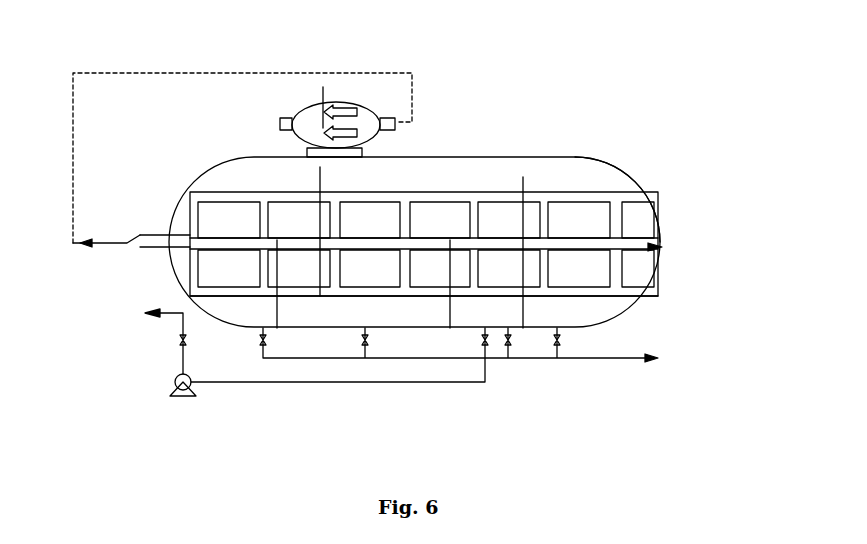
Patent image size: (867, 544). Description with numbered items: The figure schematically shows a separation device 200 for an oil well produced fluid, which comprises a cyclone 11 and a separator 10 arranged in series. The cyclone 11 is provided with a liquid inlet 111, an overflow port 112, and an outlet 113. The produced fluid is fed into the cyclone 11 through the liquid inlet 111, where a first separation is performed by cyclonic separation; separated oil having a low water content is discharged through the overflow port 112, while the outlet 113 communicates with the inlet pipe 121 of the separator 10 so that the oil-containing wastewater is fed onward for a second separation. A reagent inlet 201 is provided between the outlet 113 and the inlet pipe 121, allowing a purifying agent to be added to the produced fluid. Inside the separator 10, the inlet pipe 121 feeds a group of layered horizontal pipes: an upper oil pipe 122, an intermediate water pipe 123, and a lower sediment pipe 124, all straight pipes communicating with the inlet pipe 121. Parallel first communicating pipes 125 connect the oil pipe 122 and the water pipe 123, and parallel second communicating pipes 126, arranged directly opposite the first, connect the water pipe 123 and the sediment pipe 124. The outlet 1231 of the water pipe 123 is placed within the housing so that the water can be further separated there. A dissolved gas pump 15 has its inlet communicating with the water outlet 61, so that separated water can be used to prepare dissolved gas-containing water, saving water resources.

The separation device 200 is at (547, 100).
The separator 10 is at (560, 157).
The cyclone 11 is at (333, 119).
The liquid inlet 111 is at (325, 86).
The overflow port 112 is at (283, 123).
The outlet 113 is at (390, 127).
The inlet pipe 121 is at (138, 247).
The oil pipe 122 is at (607, 162).
The water pipe 123 is at (580, 238).
The outlet of the water pipe 1231 is at (663, 248).
The sediment pipe 124 is at (603, 300).
The first communicating pipes 125 is at (260, 220).
The second communicating pipes 126 is at (622, 268).
The reagent inlet 201 is at (105, 238).
The water outlet 61 is at (163, 315).
The dissolved gas pump 15 is at (175, 382).